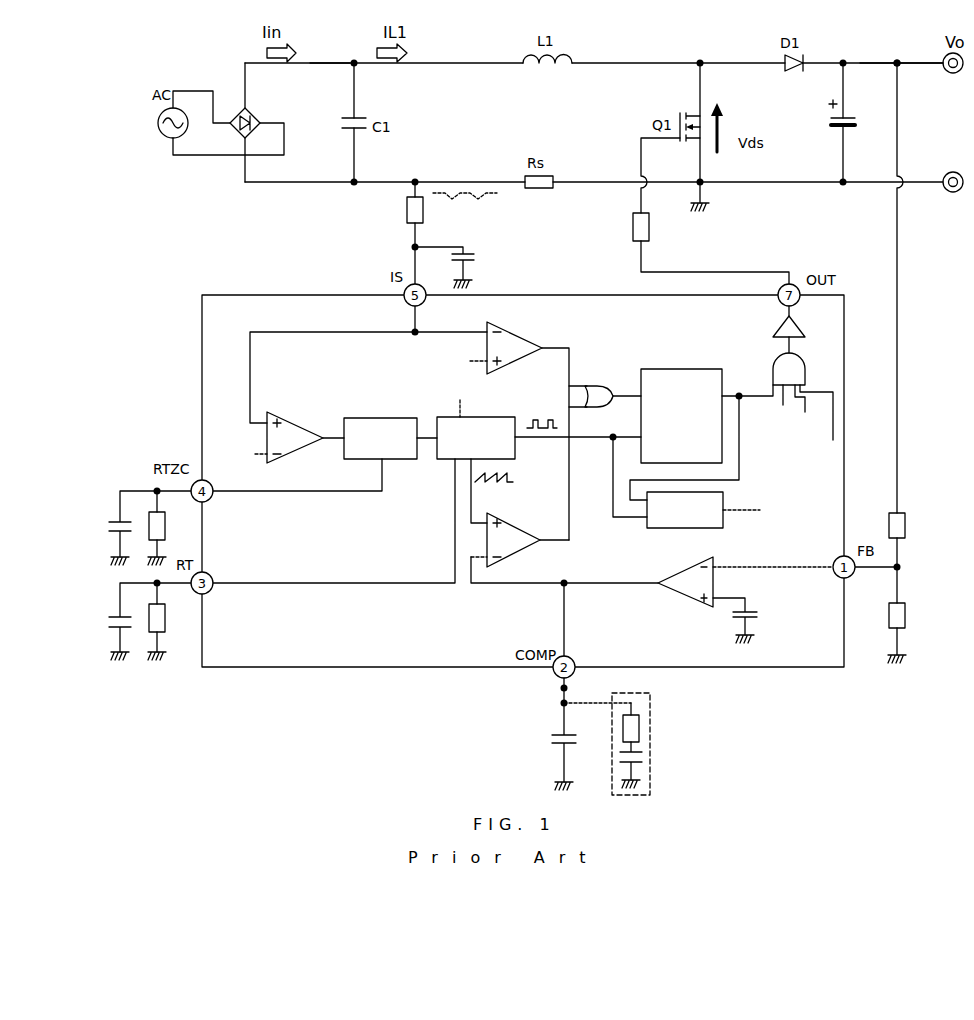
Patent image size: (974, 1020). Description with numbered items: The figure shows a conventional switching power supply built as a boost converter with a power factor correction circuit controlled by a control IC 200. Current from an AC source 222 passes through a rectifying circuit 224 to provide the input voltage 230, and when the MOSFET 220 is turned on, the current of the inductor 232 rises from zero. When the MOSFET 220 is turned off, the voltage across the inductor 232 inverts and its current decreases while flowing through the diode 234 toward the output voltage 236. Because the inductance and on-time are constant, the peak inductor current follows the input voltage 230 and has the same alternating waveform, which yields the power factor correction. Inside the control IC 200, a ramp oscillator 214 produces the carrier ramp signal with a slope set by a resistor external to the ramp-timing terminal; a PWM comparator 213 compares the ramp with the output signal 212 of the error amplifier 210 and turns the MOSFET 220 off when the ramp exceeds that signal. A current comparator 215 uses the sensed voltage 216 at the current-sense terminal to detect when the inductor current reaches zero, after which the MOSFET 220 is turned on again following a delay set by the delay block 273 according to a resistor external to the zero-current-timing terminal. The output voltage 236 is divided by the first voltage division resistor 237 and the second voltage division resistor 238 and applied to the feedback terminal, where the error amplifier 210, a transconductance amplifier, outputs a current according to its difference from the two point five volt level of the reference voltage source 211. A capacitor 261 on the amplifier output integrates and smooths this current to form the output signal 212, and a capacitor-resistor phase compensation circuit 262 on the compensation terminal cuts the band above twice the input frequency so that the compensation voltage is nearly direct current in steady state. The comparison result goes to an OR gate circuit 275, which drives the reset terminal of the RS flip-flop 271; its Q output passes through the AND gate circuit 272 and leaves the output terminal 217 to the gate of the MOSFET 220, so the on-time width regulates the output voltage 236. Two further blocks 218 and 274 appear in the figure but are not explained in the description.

The control IC 200 is at (228, 295).
The error amplifier 210 is at (690, 561).
The reference voltage source 211 is at (749, 610).
The output Vcomp 212 is at (612, 583).
The comparator (PWM.comp) 213 is at (518, 550).
The ramp oscillator 214 is at (440, 465).
The current comparator 215 is at (302, 450).
The voltage in the IS terminal 216 is at (370, 332).
The OUT terminal 217 is at (735, 272).
The overcurrent comparator 218 is at (515, 362).
The MOSFET Q1 220 is at (676, 145).
The AC source 222 is at (155, 129).
The rectifying circuit 224 is at (253, 112).
The input voltage Vin 230 is at (327, 63).
The inductor L1 232 is at (540, 70).
The diode D1 234 is at (792, 70).
The output voltage 236 is at (880, 63).
The voltage division resistor R1 237 is at (905, 513).
The voltage division resistor R2 238 is at (905, 603).
The capacitor 261 is at (555, 740).
The phase compensation circuit 262 is at (650, 740).
The RS flip-flop 271 is at (676, 369).
The AND gate circuit 272 is at (808, 378).
The delay block 273 is at (370, 418).
The timer 274 is at (717, 528).
The OR gate circuit 275 is at (600, 384).